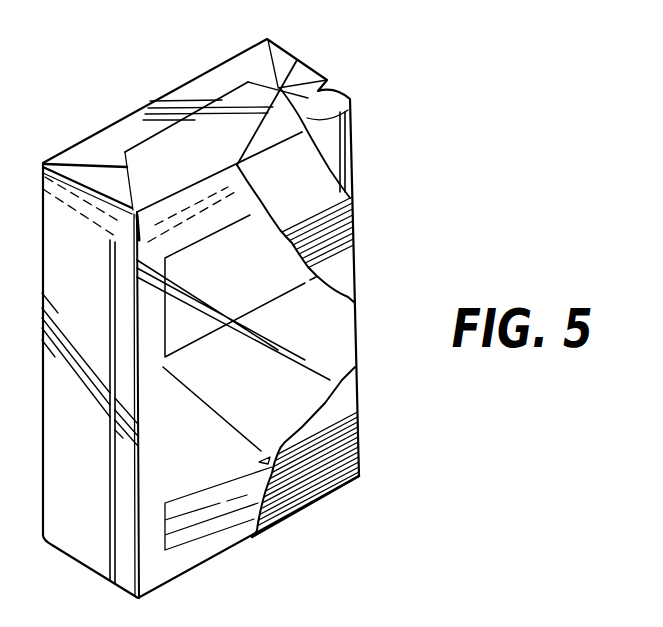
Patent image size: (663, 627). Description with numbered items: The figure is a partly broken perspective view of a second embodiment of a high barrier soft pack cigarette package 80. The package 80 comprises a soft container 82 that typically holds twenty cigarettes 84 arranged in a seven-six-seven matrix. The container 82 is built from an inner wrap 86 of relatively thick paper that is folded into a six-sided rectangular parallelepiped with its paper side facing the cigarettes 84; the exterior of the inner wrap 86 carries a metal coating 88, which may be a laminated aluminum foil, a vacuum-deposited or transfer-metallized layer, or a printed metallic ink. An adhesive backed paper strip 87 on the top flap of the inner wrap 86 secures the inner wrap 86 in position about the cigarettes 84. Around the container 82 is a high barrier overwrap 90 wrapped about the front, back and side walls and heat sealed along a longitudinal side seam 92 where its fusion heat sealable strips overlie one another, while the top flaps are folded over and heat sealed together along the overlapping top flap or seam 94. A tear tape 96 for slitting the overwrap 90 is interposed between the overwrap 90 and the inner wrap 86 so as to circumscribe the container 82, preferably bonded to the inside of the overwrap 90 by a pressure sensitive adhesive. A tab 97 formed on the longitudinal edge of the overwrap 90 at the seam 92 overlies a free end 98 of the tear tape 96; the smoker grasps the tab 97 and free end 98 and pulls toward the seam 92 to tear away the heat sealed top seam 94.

The cigarette package 80 is at (445, 158).
The soft container 82 is at (328, 78).
The cigarettes 84 is at (333, 137).
The inner wrap 86 is at (360, 218).
The adhesive backed paper strip 87 is at (243, 176).
The metal coating 88 is at (343, 282).
The high barrier overwrap 90 is at (327, 357).
The longitudinal side seam 92 is at (110, 525).
The top flap or seam 94 is at (96, 135).
The tear tape 96 is at (206, 212).
The tab 97 is at (110, 262).
The free end 98 is at (82, 215).